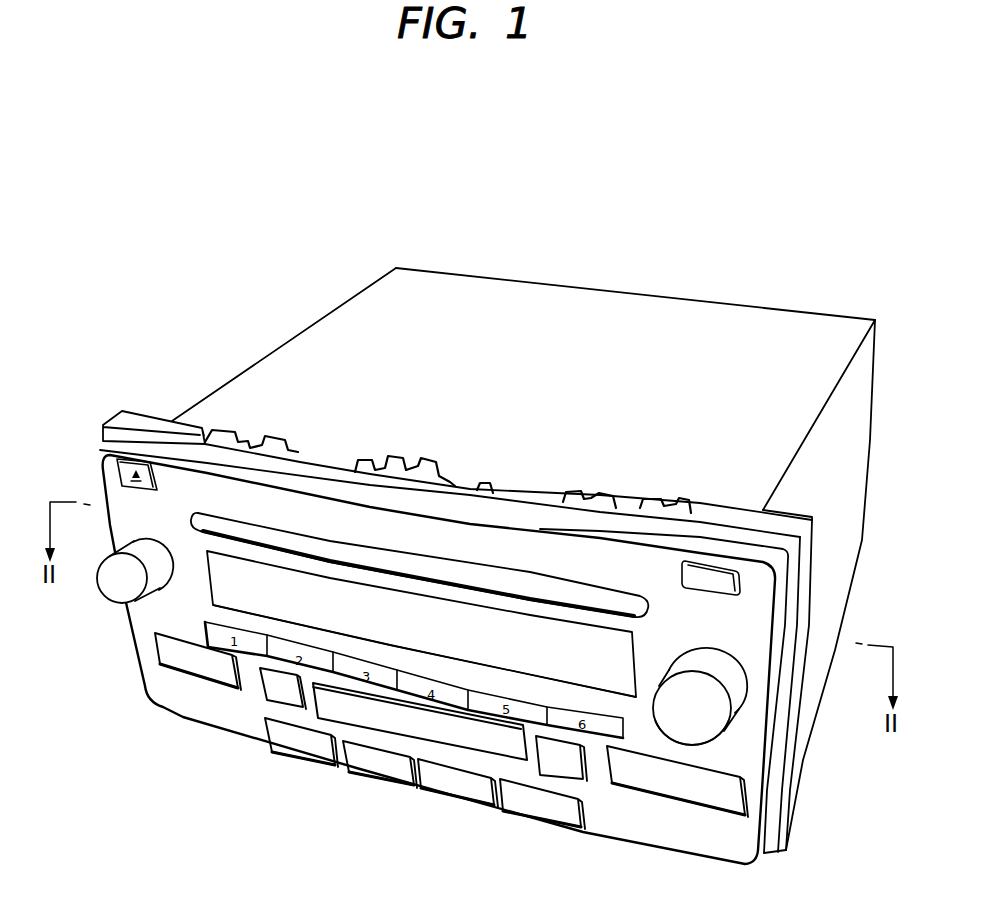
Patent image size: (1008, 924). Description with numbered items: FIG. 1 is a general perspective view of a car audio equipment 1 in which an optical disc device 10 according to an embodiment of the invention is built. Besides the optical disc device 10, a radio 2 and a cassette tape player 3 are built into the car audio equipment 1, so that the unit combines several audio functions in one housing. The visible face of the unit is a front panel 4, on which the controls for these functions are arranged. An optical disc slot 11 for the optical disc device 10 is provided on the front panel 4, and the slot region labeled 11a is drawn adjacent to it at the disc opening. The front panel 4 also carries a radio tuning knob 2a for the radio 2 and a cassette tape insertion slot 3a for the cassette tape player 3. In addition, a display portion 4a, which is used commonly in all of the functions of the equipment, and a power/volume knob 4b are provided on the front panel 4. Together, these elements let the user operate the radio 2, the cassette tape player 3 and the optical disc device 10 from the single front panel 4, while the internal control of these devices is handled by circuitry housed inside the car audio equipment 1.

The car audio equipment 1 is at (183, 343).
The radio 2 is at (745, 687).
The radio tuning knob 2a is at (705, 727).
The cassette tape player 3 is at (255, 718).
The cassette tape insertion slot 3a is at (387, 727).
The front panel 4 is at (740, 578).
The display portion 4a is at (492, 623).
The power/volume knob 4b is at (113, 593).
The optical disc device 10 is at (245, 570).
The optical disc slot 11 is at (393, 578).
The slot opening 11a is at (292, 545).